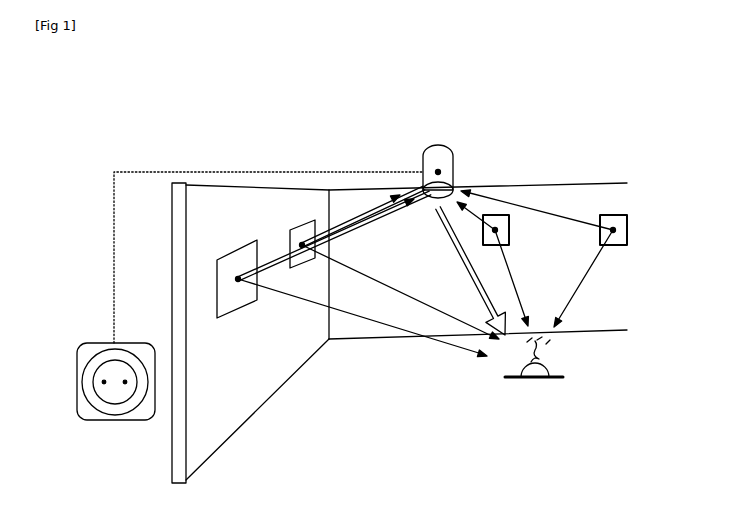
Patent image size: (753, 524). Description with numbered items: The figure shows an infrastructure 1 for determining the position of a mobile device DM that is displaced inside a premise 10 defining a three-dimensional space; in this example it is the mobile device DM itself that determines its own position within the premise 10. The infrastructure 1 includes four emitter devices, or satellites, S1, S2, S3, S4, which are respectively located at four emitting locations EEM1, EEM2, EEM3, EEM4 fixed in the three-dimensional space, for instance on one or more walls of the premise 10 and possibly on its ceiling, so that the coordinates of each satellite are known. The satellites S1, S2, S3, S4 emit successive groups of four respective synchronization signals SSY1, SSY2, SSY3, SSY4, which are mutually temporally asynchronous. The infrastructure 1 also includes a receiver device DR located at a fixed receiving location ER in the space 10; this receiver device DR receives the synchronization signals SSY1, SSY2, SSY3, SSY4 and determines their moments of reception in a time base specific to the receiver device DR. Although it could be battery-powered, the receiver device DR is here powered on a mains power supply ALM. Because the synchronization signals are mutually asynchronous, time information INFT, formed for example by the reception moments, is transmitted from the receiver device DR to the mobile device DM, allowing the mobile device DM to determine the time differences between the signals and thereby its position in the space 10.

The infrastructure 1 is at (559, 83).
The premise 10 is at (310, 184).
The mains power supply ALM is at (115, 420).
The receiver device DR is at (448, 144).
The receiving location ER is at (430, 166).
The time information INFT is at (450, 238).
The first emitter device S1 is at (234, 252).
The second emitter device S2 is at (300, 226).
The third emitter device S3 is at (510, 244).
The fourth emitter device S4 is at (627, 216).
The first emitting location EEM1 is at (238, 282).
The second emitting location EEM2 is at (303, 249).
The third emitting location EEM3 is at (510, 230).
The fourth emitting location EEM4 is at (628, 230).
The first synchronization signal SSY1 is at (459, 369).
The second synchronization signal SSY2 is at (378, 190).
The third synchronization signal SSY3 is at (475, 215).
The fourth synchronization signal SSY4 is at (543, 210).
The mobile device DM is at (539, 389).